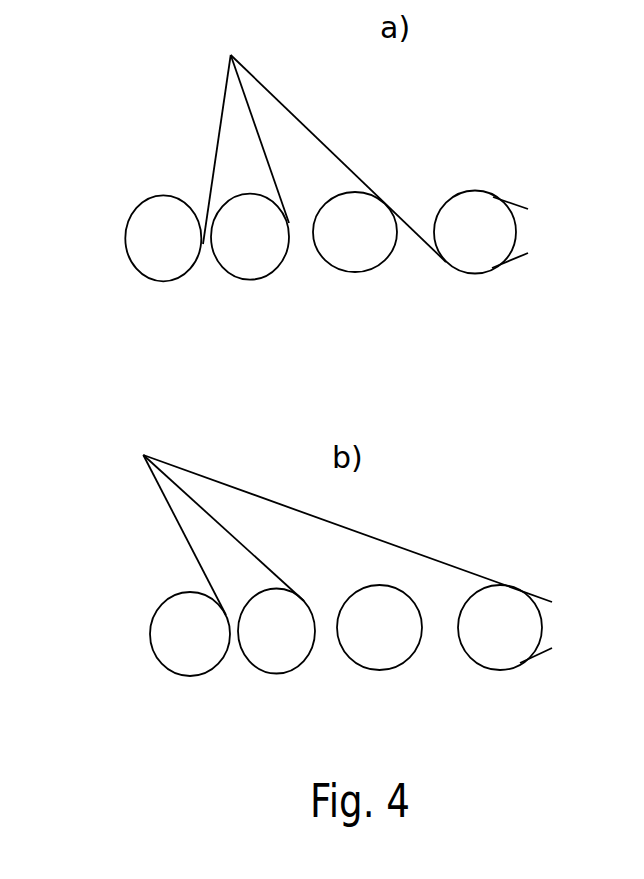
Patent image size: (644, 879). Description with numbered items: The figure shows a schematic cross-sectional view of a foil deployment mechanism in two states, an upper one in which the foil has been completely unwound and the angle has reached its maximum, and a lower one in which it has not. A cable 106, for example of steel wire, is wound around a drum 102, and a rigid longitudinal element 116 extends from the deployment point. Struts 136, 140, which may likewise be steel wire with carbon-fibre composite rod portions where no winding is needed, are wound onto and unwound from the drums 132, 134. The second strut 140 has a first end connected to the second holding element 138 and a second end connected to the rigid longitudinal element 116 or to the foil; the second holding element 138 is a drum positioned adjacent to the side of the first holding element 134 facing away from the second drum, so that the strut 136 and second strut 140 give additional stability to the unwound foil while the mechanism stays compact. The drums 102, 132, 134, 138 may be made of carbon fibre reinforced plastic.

The drum 102 is at (466, 190).
The cable 106 is at (518, 200).
The rigid longitudinal element 116 is at (322, 137).
The drum 132 is at (357, 258).
The first holding element 134 is at (253, 263).
The strut 136 is at (252, 120).
The second holding element 138 is at (162, 260).
The second strut 140 is at (215, 140).